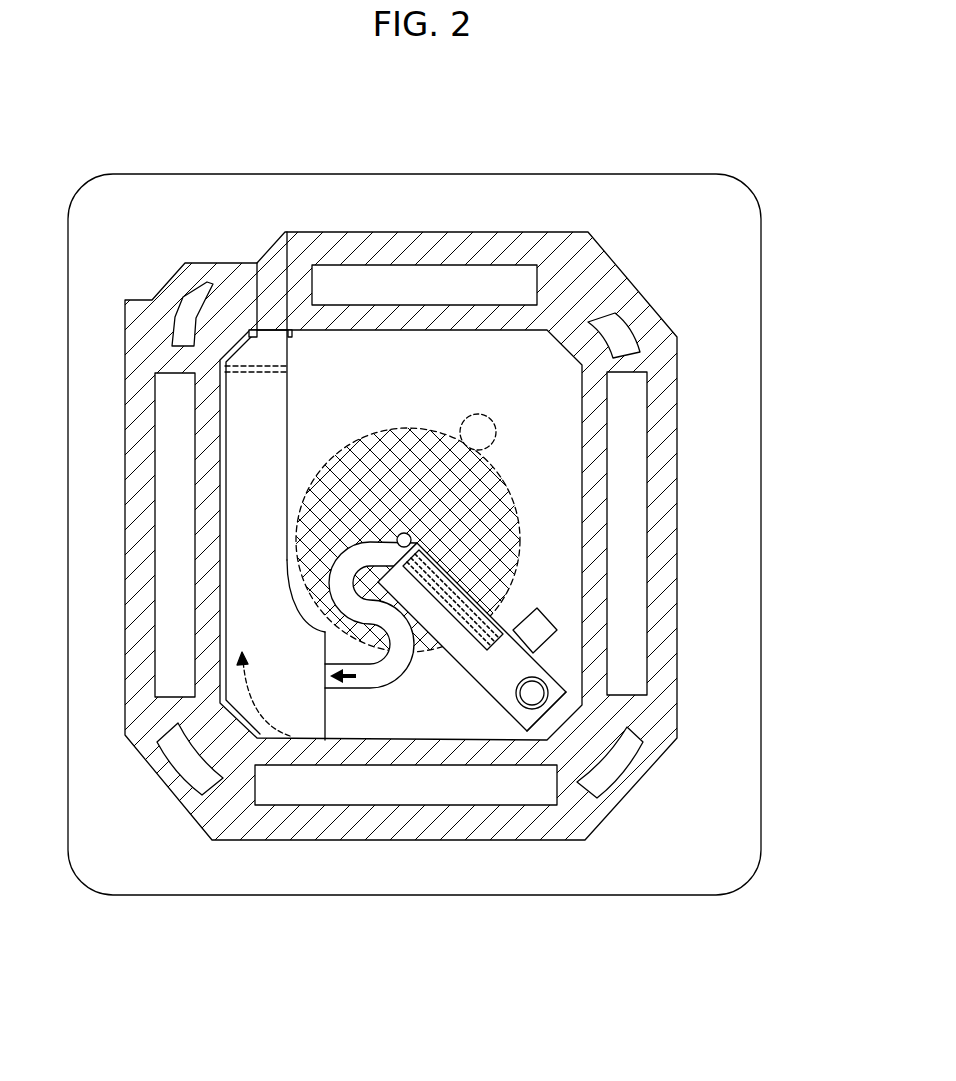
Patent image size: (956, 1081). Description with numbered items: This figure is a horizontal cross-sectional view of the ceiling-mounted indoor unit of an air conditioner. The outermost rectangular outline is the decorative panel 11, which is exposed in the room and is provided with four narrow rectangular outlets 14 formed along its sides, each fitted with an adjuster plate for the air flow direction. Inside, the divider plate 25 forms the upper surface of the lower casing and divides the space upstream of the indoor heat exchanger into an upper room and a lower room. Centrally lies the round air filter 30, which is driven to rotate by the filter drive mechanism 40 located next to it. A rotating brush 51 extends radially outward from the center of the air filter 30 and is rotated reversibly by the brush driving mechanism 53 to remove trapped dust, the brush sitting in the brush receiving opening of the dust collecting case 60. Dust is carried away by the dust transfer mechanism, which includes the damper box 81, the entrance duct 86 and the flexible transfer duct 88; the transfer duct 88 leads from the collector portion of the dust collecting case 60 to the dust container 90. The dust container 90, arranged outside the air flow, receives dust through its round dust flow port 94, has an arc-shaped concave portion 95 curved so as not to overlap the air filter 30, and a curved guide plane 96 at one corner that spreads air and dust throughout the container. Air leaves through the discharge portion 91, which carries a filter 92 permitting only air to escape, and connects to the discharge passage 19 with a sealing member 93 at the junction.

The decorative panel 11 is at (762, 247).
The outlets 14 is at (382, 266).
The discharge passage 19 is at (276, 252).
The divider plate 25 is at (437, 345).
The air filter 30 is at (402, 428).
The filter drive mechanism 40 is at (478, 413).
The rotating brush 51 is at (478, 565).
The brush driving mechanism 53 is at (537, 609).
The dust collecting case 60 is at (454, 660).
The damper box 81 is at (545, 665).
The entrance duct 86 is at (545, 705).
The transfer duct 88 is at (350, 690).
The dust container 90 is at (178, 736).
The discharge portion 91 is at (272, 340).
The filter 92 is at (268, 376).
The sealing member 93 is at (258, 335).
The dust flow port 94 is at (323, 675).
The arc-shaped concave portion 95 is at (290, 562).
The curved guide plane 96 is at (238, 647).